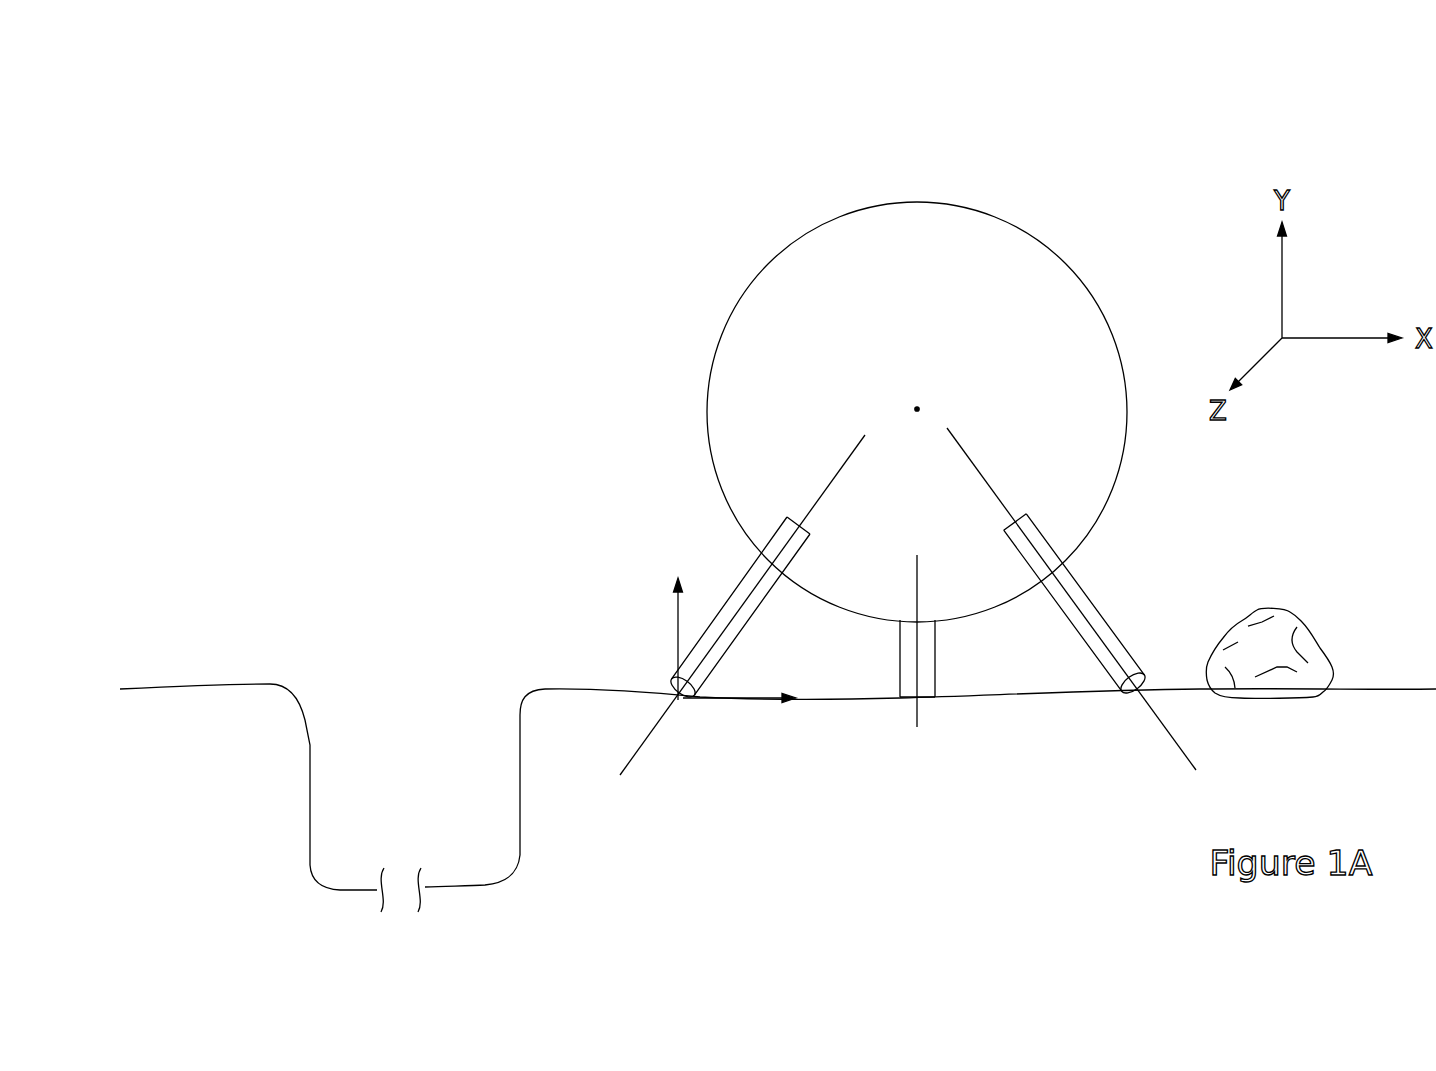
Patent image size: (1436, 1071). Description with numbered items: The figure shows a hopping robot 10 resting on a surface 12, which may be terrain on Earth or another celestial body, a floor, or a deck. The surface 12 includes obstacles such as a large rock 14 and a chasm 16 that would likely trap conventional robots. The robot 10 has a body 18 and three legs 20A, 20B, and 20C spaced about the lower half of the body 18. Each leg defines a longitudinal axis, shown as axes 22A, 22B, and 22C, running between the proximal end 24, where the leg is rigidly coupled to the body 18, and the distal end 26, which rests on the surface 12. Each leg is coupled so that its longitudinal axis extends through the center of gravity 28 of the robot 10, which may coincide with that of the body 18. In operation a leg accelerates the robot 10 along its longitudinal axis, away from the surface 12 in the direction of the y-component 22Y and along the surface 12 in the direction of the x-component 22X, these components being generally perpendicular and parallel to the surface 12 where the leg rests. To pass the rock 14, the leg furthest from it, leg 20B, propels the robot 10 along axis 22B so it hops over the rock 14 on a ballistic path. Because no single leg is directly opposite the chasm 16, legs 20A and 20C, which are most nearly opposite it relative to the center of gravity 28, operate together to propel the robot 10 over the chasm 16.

The robot 10 is at (944, 170).
The surface 12 is at (803, 707).
The rock 14 is at (1287, 610).
The chasm 16 is at (455, 657).
The body 18 is at (1092, 292).
The leg 20A is at (1090, 595).
The leg 20B is at (716, 623).
The leg 20C is at (988, 650).
The longitudinal axis 22A is at (1110, 647).
The longitudinal axis 22B is at (823, 492).
The longitudinal axis 22C is at (918, 713).
The x-component of the longitudinal axis 22X is at (752, 693).
The y-component of the longitudinal axis 22Y is at (678, 650).
The proximal end 24 is at (787, 519).
The distal end 26 is at (685, 707).
The center of gravity 28 is at (913, 405).